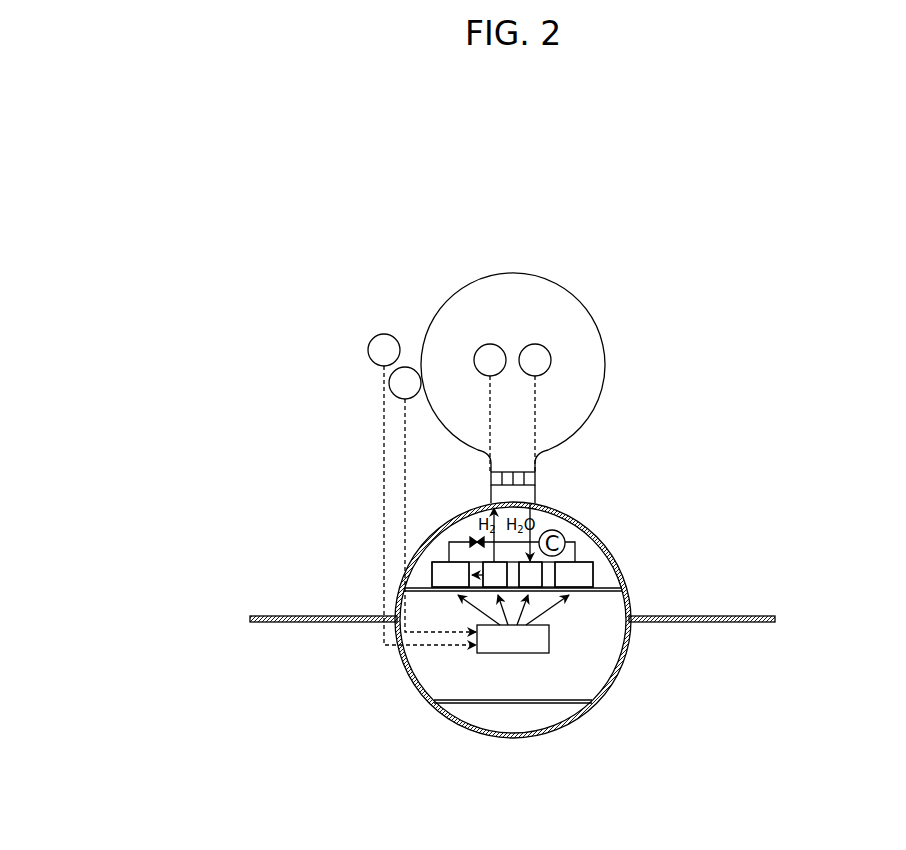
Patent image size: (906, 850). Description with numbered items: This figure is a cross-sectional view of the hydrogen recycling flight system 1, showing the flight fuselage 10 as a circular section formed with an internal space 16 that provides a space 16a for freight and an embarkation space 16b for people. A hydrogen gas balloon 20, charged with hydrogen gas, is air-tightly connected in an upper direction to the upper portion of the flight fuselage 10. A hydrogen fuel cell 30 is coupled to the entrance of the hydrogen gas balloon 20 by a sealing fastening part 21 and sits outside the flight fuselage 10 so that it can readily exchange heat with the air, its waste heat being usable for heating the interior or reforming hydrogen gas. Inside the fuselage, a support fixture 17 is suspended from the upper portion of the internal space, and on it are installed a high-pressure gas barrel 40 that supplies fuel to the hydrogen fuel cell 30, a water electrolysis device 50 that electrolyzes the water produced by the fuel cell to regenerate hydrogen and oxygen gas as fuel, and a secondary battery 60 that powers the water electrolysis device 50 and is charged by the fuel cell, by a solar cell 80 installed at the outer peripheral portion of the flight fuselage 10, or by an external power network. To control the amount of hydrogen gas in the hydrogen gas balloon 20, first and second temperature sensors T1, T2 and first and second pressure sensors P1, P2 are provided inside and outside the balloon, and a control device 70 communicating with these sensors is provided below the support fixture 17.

The hydrogen recycling flight system 1 is at (518, 239).
The flight fuselage 10 is at (622, 673).
The internal space 16 is at (496, 694).
The space for freight 16a is at (533, 706).
The embarkation space for people 16b is at (580, 674).
The support fixture 17 is at (592, 592).
The hydrogen gas balloon 20 is at (583, 375).
The sealing fastening part 21 is at (529, 476).
The hydrogen fuel cell 30 is at (528, 497).
The high-pressure gas barrel 40 is at (512, 575).
The water electrolysis device 50 is at (450, 575).
The secondary battery 60 is at (574, 575).
The control device 70 is at (513, 624).
The solar cell 80 is at (719, 617).
The first pressure sensor P1 is at (535, 408).
The second pressure sensor P2 is at (422, 489).
The first temperature sensor T1 is at (490, 408).
The second temperature sensor T2 is at (432, 499).